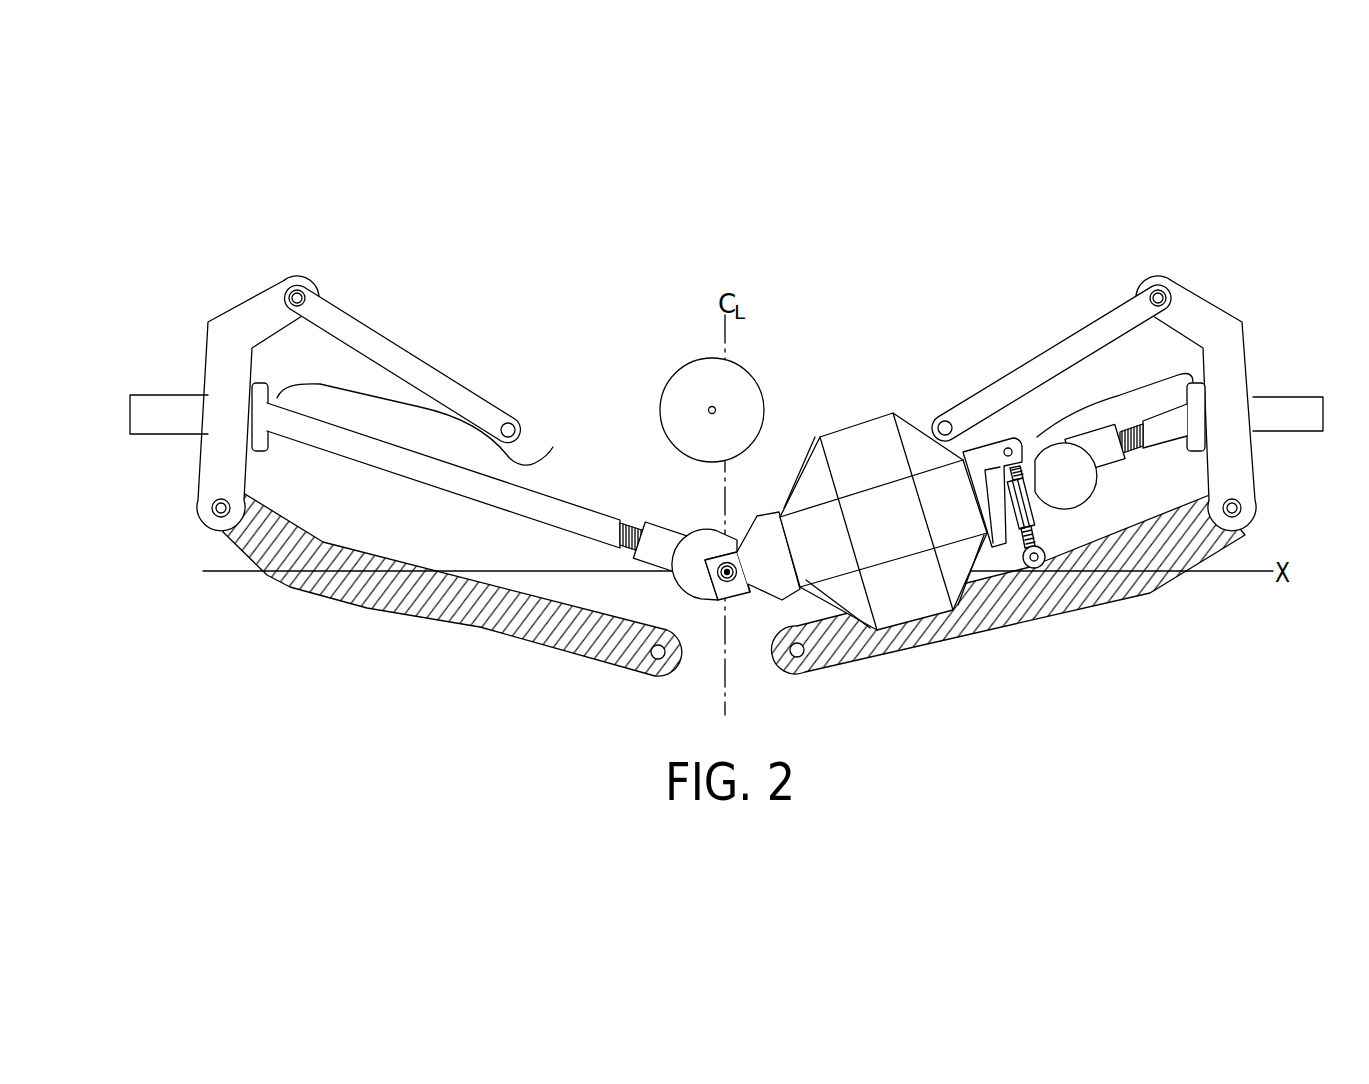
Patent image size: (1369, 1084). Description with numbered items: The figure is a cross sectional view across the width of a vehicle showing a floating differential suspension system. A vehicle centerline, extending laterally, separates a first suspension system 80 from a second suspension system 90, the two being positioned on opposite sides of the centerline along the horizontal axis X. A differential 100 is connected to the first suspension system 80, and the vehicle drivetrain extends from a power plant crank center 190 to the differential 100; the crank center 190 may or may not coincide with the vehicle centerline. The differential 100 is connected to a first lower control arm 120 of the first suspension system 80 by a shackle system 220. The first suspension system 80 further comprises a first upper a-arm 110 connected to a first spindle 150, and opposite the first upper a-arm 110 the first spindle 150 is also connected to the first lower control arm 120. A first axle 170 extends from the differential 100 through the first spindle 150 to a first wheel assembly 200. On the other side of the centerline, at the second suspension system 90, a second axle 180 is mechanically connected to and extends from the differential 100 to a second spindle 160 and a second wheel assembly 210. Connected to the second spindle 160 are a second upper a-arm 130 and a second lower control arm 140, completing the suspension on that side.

The first suspension system 80 is at (1231, 347).
The second suspension system 90 is at (226, 359).
The differential 100 is at (905, 600).
The first upper a-arm 110 is at (1055, 358).
The first lower control arm 120 is at (1047, 607).
The second upper a-arm 130 is at (393, 362).
The second lower control arm 140 is at (483, 625).
The first spindle 150 is at (1237, 355).
The second spindle 160 is at (218, 356).
The first axle 170 is at (1120, 395).
The second axle 180 is at (697, 523).
The power plant crank center 190 is at (712, 406).
The first wheel assembly 200 is at (1298, 440).
The second wheel assembly 210 is at (165, 438).
The shackle system 220 is at (1057, 547).